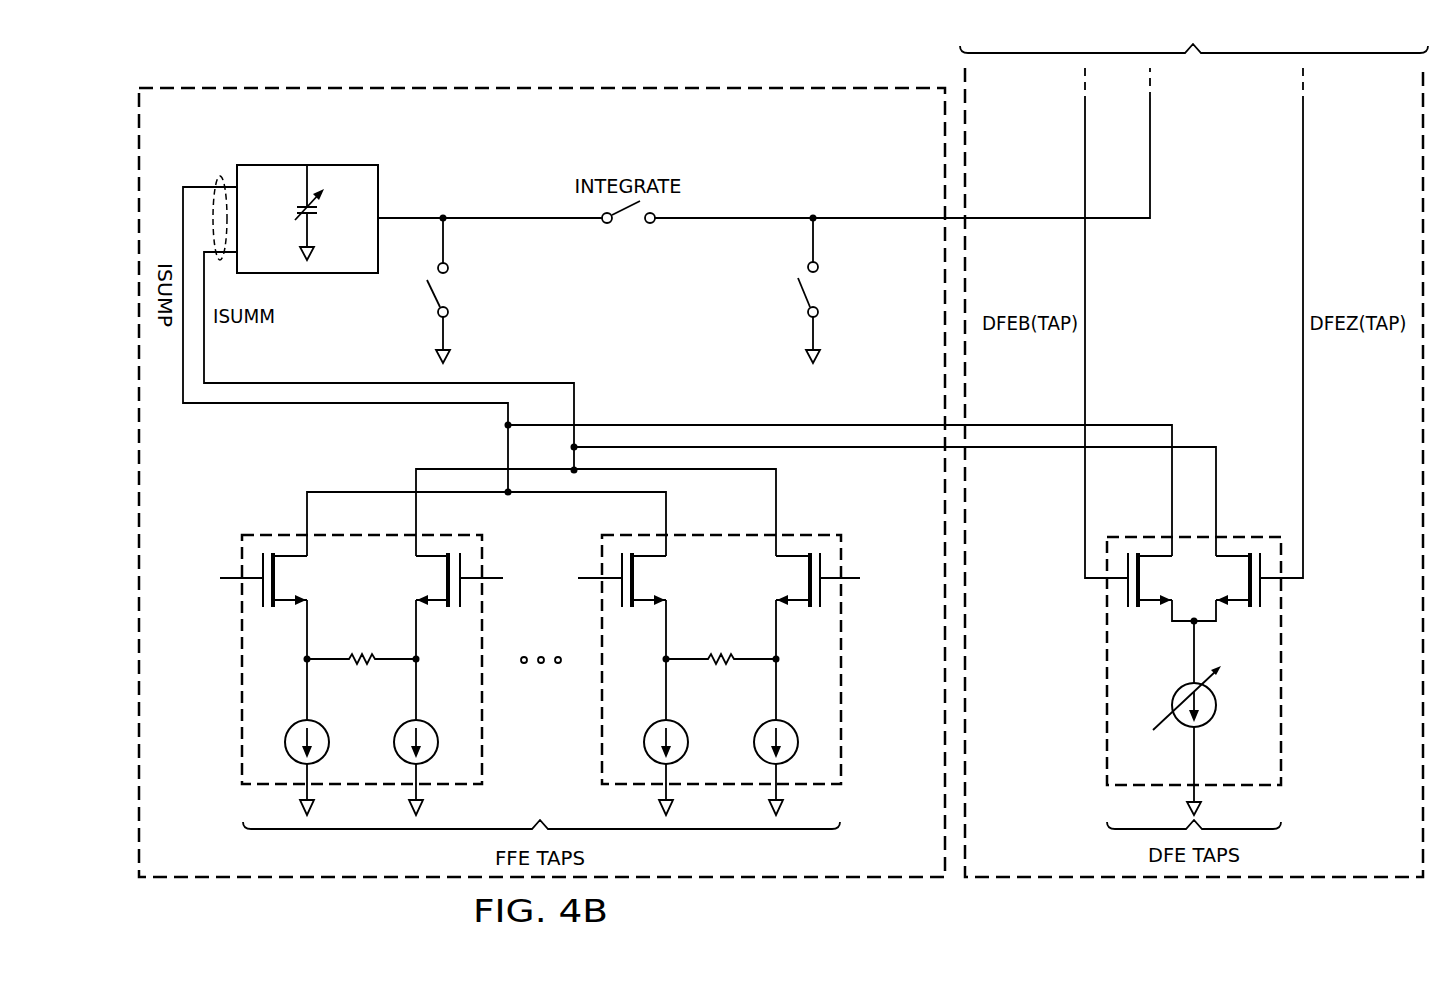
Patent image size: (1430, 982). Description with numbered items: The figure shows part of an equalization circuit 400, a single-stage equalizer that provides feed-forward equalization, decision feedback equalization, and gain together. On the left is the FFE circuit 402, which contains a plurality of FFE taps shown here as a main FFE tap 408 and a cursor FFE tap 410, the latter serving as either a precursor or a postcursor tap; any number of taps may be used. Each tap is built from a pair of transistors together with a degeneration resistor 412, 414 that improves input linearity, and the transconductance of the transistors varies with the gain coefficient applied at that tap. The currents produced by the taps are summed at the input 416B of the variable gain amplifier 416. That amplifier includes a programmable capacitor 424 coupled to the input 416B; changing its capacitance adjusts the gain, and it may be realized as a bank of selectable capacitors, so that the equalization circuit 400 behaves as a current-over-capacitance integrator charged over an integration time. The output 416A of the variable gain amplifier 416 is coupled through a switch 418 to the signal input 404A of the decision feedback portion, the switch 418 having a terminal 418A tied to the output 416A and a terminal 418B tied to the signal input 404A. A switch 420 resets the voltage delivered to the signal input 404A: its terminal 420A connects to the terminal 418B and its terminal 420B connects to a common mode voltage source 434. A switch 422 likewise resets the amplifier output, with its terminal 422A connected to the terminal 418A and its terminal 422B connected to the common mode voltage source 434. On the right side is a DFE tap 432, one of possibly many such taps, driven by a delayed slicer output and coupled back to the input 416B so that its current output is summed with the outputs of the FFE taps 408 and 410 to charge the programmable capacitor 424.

The equalization circuit 400 is at (405, 62).
The FFE circuit 402 is at (128, 535).
The signal input 404A is at (1150, 175).
The main FFE tap 408 is at (740, 670).
The cursor FFE tap 410 is at (345, 662).
The degeneration resistor 412 is at (722, 668).
The degeneration resistor 414 is at (360, 668).
The variable gain amplifier 416 is at (292, 155).
The output 416A is at (405, 217).
The input 416B is at (216, 176).
The switch 418 is at (625, 226).
The terminal 418A is at (586, 222).
The terminal 418B is at (672, 222).
The switch 420 is at (848, 287).
The terminal 420A is at (820, 255).
The terminal 420B is at (819, 331).
The switch 422 is at (473, 287).
The terminal 422A is at (450, 252).
The terminal 422B is at (449, 334).
The programmable capacitor 424 is at (320, 208).
The DFE tap 432 is at (1295, 700).
The common mode voltage source 434 is at (818, 362).